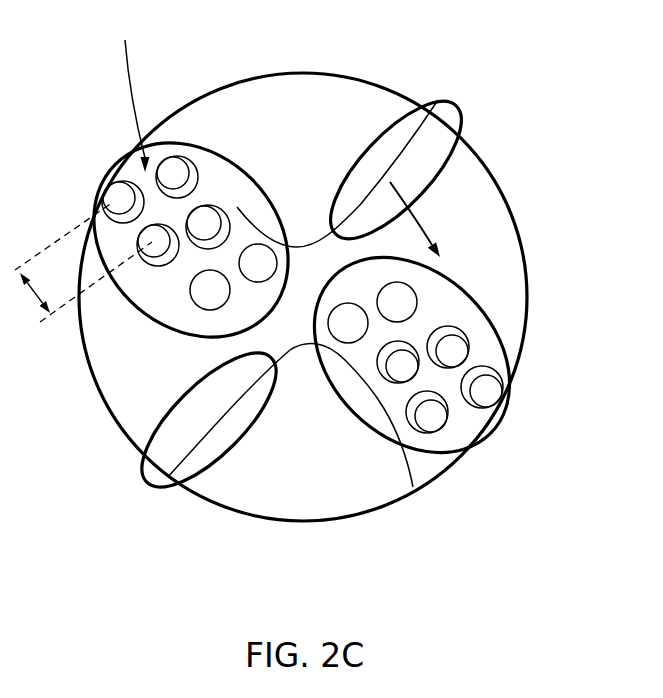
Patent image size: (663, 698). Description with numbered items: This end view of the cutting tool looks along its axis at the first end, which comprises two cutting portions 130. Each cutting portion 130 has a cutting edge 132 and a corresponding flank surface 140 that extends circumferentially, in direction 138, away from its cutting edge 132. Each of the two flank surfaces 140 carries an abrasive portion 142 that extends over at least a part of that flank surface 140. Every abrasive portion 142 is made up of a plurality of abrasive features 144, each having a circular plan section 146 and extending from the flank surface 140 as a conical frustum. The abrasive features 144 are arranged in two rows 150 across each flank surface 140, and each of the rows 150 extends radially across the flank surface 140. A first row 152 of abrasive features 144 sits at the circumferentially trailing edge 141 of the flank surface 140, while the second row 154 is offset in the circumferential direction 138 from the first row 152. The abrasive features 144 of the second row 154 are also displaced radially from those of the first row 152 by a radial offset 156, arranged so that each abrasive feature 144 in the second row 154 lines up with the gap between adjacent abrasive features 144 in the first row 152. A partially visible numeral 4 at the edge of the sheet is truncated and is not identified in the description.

The cutting portion 130 is at (488, 232).
The cutting edge 132 is at (437, 100).
The circumferential direction 138 is at (436, 222).
The flank surface 140 is at (478, 205).
The circumferentially trailing edge 141 is at (407, 427).
The abrasive portion 142 is at (258, 242).
The abrasive feature 144 is at (333, 407).
The circular plan section 146 is at (482, 405).
The rows 150 is at (128, 92).
The first row 152 is at (112, 207).
The second row 154 is at (258, 242).
The radial offset 156 is at (44, 300).
The partial numeral 4 is at (6, 380).